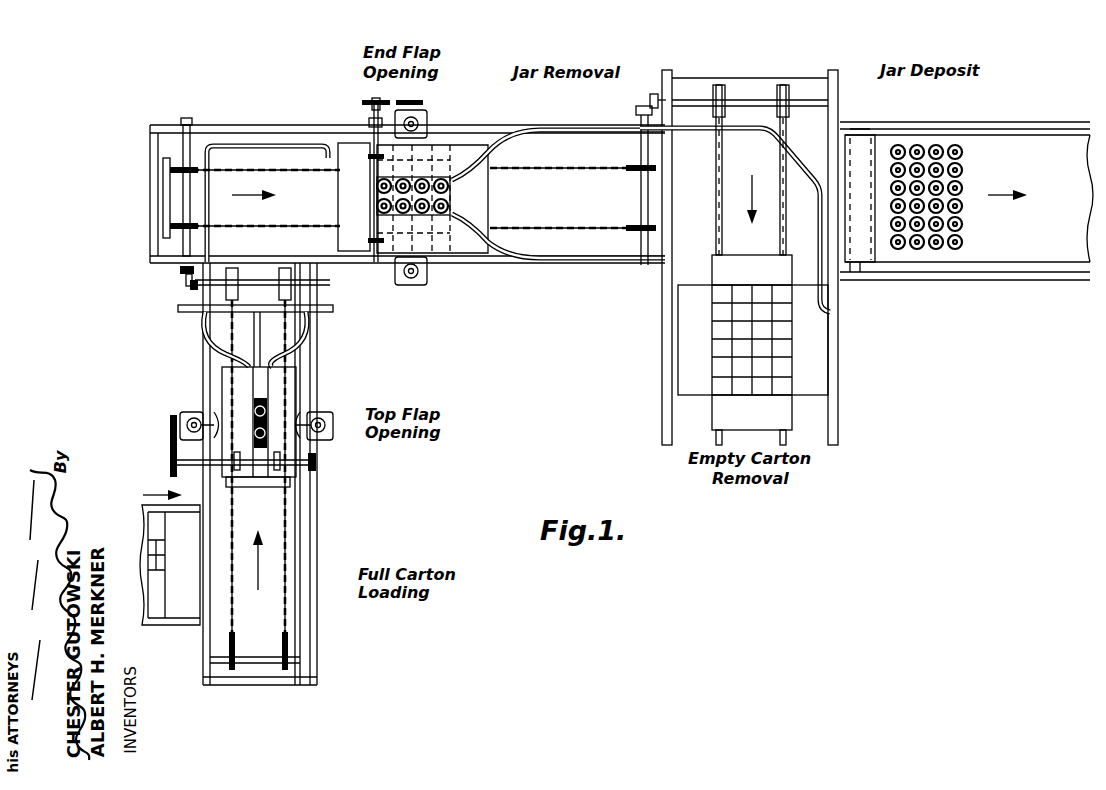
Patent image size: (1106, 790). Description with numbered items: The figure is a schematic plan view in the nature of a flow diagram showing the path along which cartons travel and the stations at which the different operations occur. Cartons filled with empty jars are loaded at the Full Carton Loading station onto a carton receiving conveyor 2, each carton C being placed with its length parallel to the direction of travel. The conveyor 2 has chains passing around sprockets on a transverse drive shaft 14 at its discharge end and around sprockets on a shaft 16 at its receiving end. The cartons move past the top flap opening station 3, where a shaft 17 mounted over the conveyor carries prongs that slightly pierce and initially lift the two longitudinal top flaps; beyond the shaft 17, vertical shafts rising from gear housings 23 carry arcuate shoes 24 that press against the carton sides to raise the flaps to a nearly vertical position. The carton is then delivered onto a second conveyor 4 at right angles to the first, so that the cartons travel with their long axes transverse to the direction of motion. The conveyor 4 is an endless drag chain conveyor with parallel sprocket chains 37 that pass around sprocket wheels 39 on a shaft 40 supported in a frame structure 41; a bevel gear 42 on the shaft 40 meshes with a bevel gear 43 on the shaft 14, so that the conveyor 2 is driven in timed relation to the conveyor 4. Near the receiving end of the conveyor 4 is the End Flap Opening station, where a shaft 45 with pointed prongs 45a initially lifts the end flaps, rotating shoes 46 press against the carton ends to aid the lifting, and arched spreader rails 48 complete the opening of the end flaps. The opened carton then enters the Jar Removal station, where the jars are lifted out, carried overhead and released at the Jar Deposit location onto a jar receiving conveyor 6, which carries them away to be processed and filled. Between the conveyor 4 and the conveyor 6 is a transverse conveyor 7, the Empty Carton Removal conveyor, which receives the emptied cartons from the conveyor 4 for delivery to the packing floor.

The carton receiving conveyor 2 is at (330, 688).
The top flap opening station 3 is at (118, 414).
The second conveyor 4 is at (158, 98).
The jar receiving conveyor 6 is at (980, 114).
The transverse conveyor 7 is at (645, 350).
The transverse drive shaft 14 is at (316, 282).
The shaft 16 is at (258, 660).
The shaft 17 is at (290, 470).
The gear housing 23 is at (176, 438).
The arcuate shoe 24 is at (196, 412).
The sprocket chains 37 is at (540, 226).
The sprocket wheels 39 is at (198, 225).
The shaft 40 is at (160, 153).
The frame structure 41 is at (252, 125).
The bevel gear 42 is at (180, 271).
The bevel gear 43 is at (192, 288).
The shaft 45 is at (372, 194).
The end flap opener shaft 45a is at (368, 156).
The rotating shoes 46 is at (430, 120).
The arched spreader rails 48 is at (500, 140).
The carton C is at (290, 378).